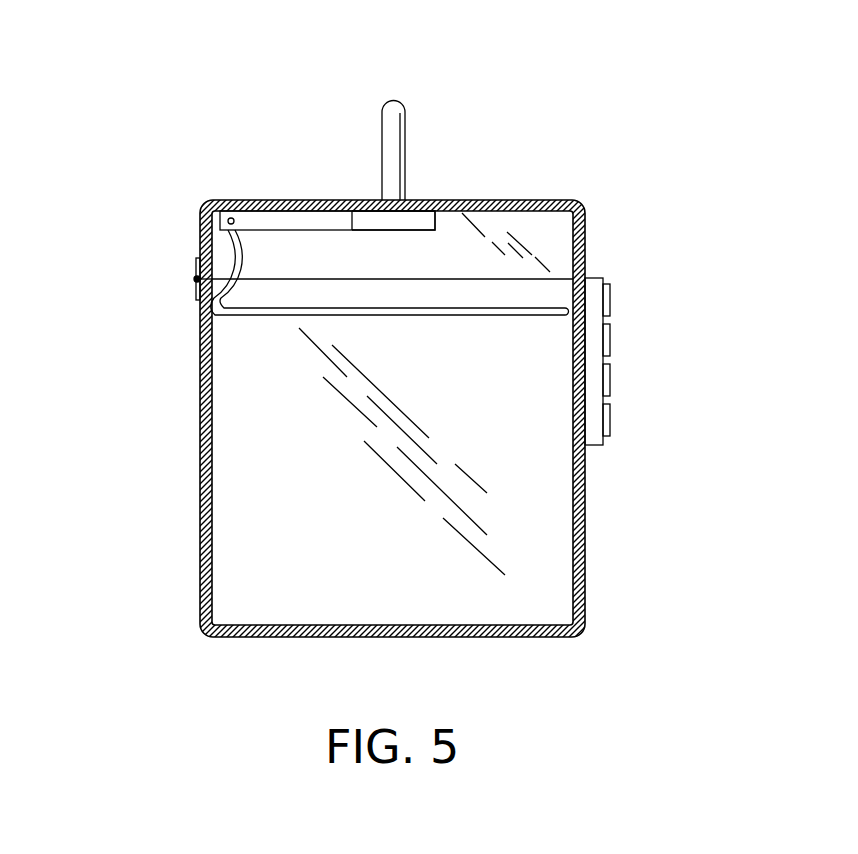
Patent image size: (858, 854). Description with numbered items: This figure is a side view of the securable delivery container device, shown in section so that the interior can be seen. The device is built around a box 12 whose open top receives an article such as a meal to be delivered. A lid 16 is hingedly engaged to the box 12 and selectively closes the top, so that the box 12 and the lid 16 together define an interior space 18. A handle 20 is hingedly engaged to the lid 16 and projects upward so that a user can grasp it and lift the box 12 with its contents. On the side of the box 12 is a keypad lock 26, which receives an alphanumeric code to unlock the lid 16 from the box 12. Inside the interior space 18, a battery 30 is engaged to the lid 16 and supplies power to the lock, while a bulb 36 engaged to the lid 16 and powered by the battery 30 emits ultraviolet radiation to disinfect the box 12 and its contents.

The box 12 is at (585, 522).
The lid 16 is at (585, 241).
The interior space 18 is at (282, 440).
The handle 20 is at (388, 115).
The keypad lock 26 is at (592, 348).
The battery 30 is at (297, 220).
The bulb 36 is at (415, 222).